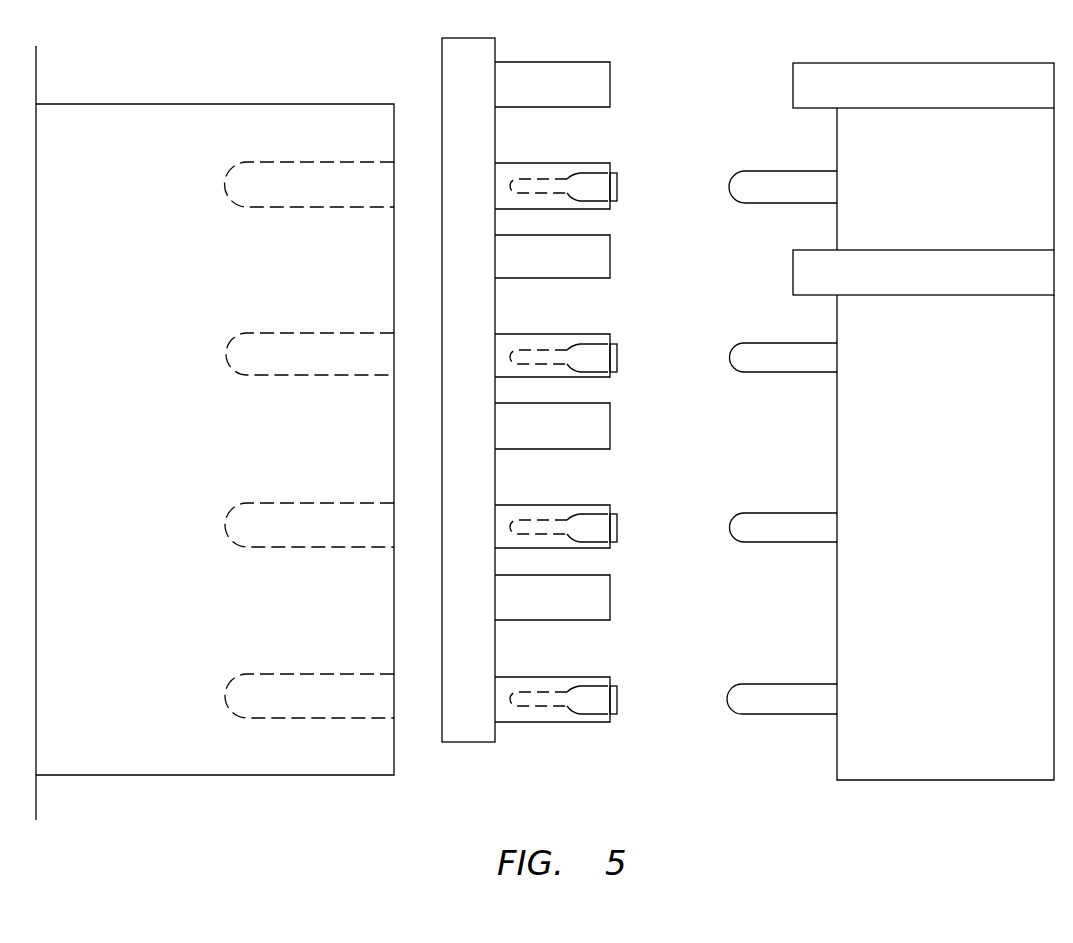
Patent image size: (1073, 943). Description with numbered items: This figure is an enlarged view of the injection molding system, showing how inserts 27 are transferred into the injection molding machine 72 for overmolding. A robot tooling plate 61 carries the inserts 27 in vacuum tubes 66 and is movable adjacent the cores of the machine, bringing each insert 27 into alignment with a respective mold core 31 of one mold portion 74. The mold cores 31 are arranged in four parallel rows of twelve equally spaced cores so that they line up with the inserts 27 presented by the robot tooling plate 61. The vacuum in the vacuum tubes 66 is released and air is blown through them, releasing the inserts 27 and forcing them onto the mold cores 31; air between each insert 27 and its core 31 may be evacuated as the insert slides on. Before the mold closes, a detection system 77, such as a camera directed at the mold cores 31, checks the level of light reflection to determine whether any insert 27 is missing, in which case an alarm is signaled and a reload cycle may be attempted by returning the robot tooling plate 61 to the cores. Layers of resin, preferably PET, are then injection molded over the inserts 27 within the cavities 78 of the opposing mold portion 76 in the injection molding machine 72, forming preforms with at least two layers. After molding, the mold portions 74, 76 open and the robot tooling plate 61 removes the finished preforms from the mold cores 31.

The insert 27 is at (573, 362).
The mold core 31 is at (780, 707).
The robot tooling plate 61 is at (481, 42).
The vacuum tube 66 is at (573, 275).
The injection molding machine 72 is at (691, 745).
The mold portion 74 is at (947, 763).
The mold portion 76 is at (131, 744).
The camera system 77 is at (876, 63).
The cavity 78 is at (292, 685).